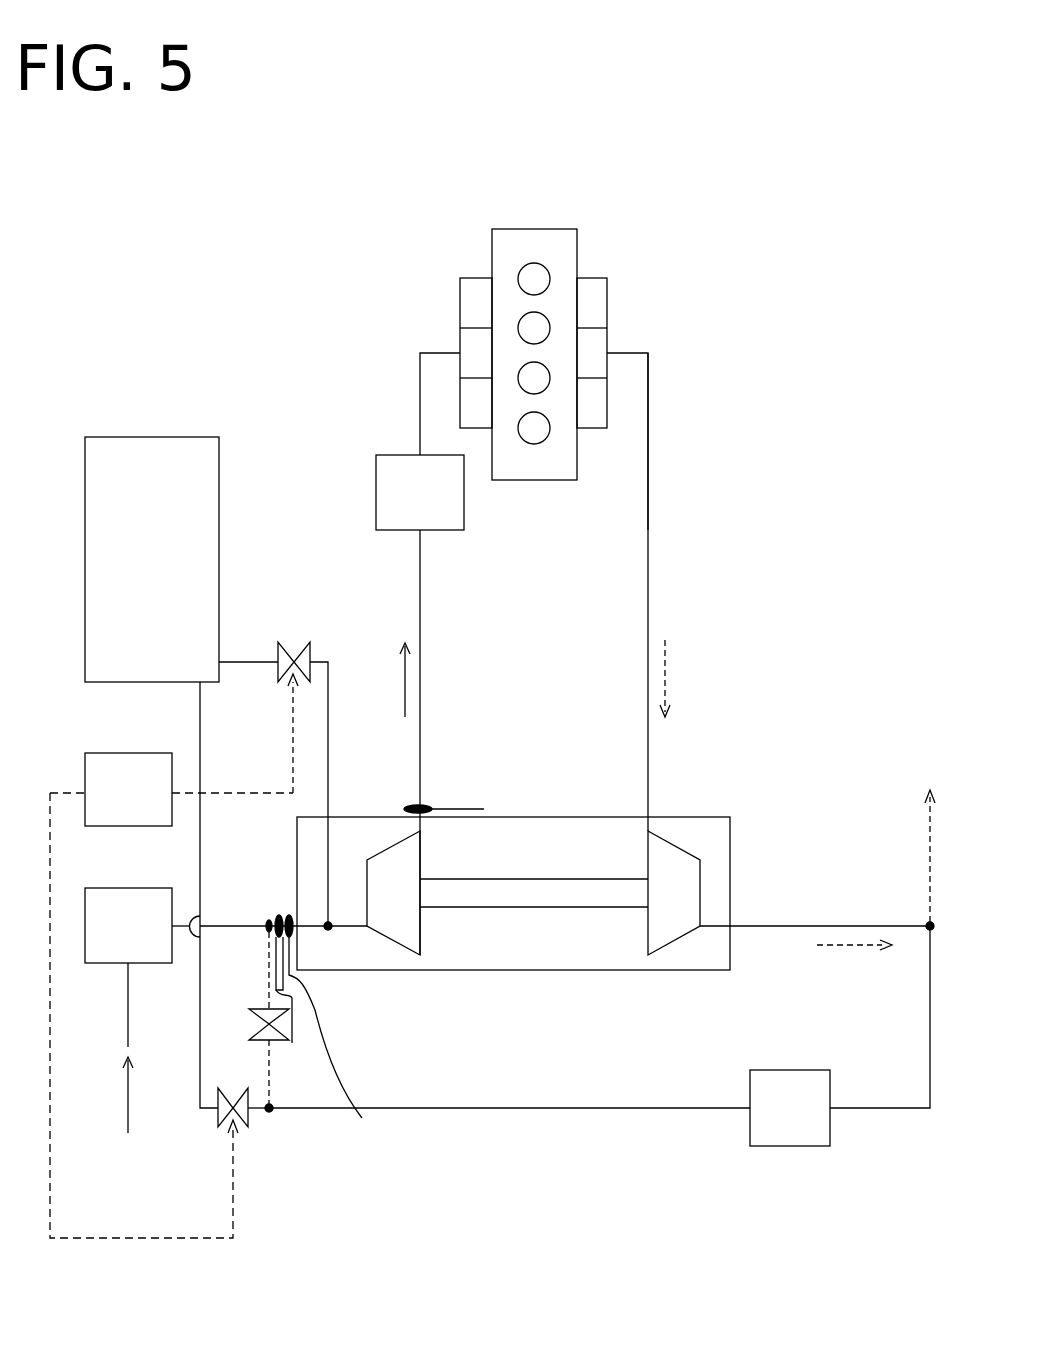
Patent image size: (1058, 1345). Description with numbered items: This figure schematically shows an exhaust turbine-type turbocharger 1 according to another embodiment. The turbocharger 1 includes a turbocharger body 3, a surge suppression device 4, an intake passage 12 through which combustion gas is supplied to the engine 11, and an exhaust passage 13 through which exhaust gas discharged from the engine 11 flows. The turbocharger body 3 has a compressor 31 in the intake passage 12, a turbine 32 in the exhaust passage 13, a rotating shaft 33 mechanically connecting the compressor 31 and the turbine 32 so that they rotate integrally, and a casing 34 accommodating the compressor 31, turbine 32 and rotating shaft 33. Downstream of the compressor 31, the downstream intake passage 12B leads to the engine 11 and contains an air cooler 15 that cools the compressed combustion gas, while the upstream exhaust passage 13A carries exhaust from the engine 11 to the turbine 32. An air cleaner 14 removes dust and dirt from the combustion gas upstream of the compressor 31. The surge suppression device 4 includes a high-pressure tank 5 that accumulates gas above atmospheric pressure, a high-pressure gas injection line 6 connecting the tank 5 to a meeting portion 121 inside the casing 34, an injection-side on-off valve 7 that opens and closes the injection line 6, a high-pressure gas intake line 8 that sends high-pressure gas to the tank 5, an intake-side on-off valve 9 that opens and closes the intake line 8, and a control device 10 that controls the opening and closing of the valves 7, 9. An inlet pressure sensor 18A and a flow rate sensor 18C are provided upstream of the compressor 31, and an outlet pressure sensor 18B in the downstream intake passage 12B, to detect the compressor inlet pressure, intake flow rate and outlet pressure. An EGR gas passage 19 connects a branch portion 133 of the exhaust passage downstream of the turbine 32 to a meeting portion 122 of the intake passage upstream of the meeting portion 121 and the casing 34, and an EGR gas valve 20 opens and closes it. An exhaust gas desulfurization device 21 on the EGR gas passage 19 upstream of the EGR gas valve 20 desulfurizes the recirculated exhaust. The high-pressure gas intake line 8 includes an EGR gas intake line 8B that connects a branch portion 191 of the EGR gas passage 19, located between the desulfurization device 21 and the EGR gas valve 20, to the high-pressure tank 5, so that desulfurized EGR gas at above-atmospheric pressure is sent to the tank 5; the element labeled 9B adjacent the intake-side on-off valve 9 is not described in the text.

The turbocharger 1 is at (278, 215).
The turbocharger body 3 is at (477, 972).
The surge suppression device 4 is at (121, 437).
The high-pressure tank 5 is at (192, 437).
The high-pressure gas injection line 6 is at (328, 745).
The injection-side on-off valve 7 is at (278, 655).
The high-pressure gas intake line 8 is at (200, 1000).
The EGR gas intake line 8B is at (200, 1027).
The intake-side on-off valve 9 is at (218, 1110).
The valve actuator 9B is at (226, 1123).
The control device 10 is at (127, 753).
The engine 11 is at (534, 229).
The intake passage 12 is at (420, 573).
The downstream intake passage 12B is at (420, 718).
The exhaust passage 13 is at (648, 568).
The upstream exhaust passage 13A is at (648, 490).
The air cleaner 14 is at (110, 963).
The air cooler 15 is at (464, 505).
The inlet pressure sensor 18A is at (304, 1009).
The outlet pressure sensor 18B is at (463, 809).
The flow rate sensor 18C is at (360, 1046).
The EGR gas passage 19 is at (630, 1108).
The EGR gas valve 20 is at (250, 1020).
The exhaust gas desulfurization device 21 is at (790, 1146).
The compressor 31 is at (400, 948).
The turbine 32 is at (680, 940).
The rotating shaft 33 is at (562, 907).
The casing 34 is at (383, 970).
The meeting portion 121 is at (328, 930).
The meeting portion 122 is at (269, 920).
The branch portion 133 is at (928, 930).
The branch portion 191 is at (269, 1112).